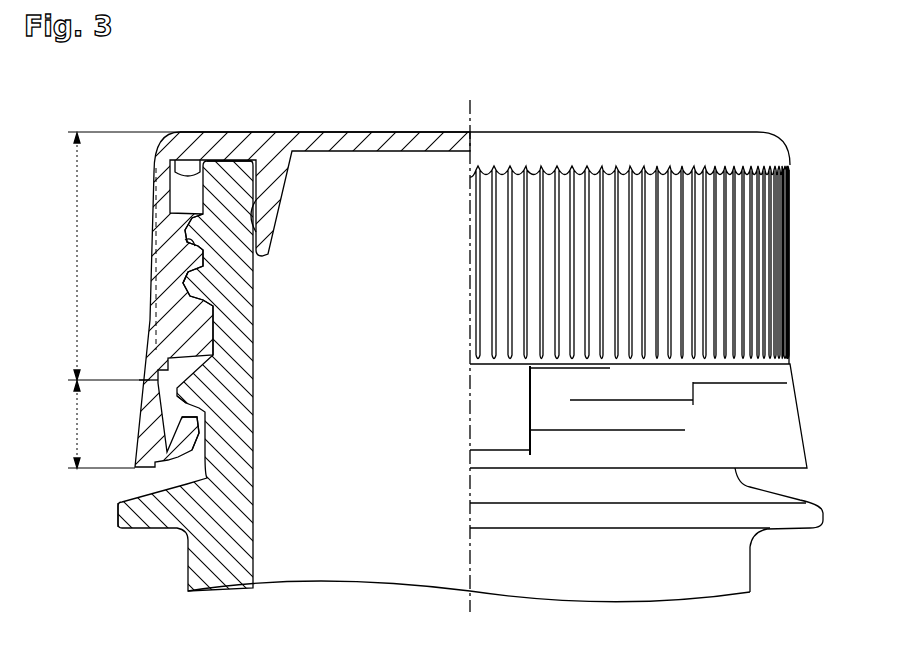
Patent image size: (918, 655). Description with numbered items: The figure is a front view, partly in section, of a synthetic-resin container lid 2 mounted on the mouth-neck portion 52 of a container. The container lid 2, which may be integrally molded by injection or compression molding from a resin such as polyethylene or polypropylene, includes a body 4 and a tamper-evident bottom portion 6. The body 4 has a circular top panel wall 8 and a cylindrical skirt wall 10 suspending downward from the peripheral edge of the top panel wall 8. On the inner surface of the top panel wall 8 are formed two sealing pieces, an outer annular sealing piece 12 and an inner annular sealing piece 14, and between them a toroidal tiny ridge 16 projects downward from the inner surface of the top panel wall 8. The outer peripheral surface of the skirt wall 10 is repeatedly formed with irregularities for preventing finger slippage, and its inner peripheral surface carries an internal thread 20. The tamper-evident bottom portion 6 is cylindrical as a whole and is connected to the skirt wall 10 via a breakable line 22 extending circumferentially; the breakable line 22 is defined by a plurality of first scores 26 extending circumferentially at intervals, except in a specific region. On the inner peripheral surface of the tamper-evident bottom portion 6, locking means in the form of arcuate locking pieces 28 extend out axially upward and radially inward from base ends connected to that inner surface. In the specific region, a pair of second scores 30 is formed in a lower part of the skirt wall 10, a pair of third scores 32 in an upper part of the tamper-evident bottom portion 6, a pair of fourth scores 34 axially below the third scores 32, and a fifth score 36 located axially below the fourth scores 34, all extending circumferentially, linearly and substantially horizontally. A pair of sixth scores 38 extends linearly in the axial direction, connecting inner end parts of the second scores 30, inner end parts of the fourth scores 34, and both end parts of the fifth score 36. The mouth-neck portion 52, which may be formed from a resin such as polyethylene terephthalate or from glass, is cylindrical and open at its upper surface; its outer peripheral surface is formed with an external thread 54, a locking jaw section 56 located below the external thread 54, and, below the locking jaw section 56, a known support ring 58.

The container lid 2 is at (574, 104).
The body 4 is at (124, 256).
The tamper-evident bottom portion 6 is at (101, 424).
The top panel wall 8 is at (677, 129).
The skirt wall 10 is at (795, 213).
The outer annular sealing piece 12 is at (190, 175).
The inner annular sealing piece 14 is at (274, 188).
The toroidal tiny ridge 16 is at (233, 167).
The internal thread 20 is at (183, 246).
The breakable line 22 is at (141, 381).
The first scores 26 is at (733, 384).
The arcuate locking pieces 28 is at (204, 451).
The second scores 30 is at (548, 369).
The third scores 32 is at (592, 401).
The fourth scores 34 is at (647, 431).
The fifth score 36 is at (503, 451).
The sixth scores 38 is at (528, 412).
The mouth-neck portion 52 is at (166, 556).
The external thread 54 is at (183, 281).
The locking jaw section 56 is at (168, 401).
The support ring 58 is at (118, 511).